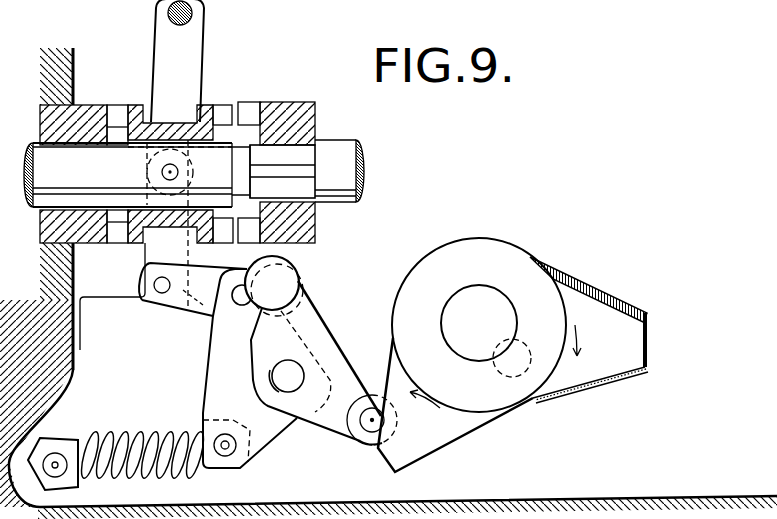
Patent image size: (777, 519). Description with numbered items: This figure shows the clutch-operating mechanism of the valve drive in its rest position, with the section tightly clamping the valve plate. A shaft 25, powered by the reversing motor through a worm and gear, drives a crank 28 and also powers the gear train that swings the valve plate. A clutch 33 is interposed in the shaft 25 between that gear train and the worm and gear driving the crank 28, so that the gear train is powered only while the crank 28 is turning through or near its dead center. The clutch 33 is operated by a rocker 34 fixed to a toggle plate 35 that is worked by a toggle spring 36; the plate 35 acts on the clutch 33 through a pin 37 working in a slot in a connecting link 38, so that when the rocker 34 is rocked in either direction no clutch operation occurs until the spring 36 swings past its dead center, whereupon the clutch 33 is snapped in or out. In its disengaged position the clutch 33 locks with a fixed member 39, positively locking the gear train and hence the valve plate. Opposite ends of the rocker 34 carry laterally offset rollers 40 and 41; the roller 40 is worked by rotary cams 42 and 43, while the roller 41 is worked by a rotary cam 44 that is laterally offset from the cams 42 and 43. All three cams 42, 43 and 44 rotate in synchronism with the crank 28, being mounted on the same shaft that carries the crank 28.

The shaft 25 is at (106, 163).
The crank 28 is at (521, 346).
The clutch 33 is at (220, 104).
The rocker 34 is at (315, 328).
The toggle plate 35 is at (218, 366).
The toggle spring 36 is at (147, 430).
The pin 37 is at (242, 303).
The connecting link 38 is at (167, 272).
The fixed member 39 is at (87, 106).
The roller 40 is at (298, 270).
The roller 41 is at (358, 452).
The rotary cam 42 is at (415, 450).
The rotary cam 43 is at (627, 350).
The rotary cam 44 is at (616, 299).